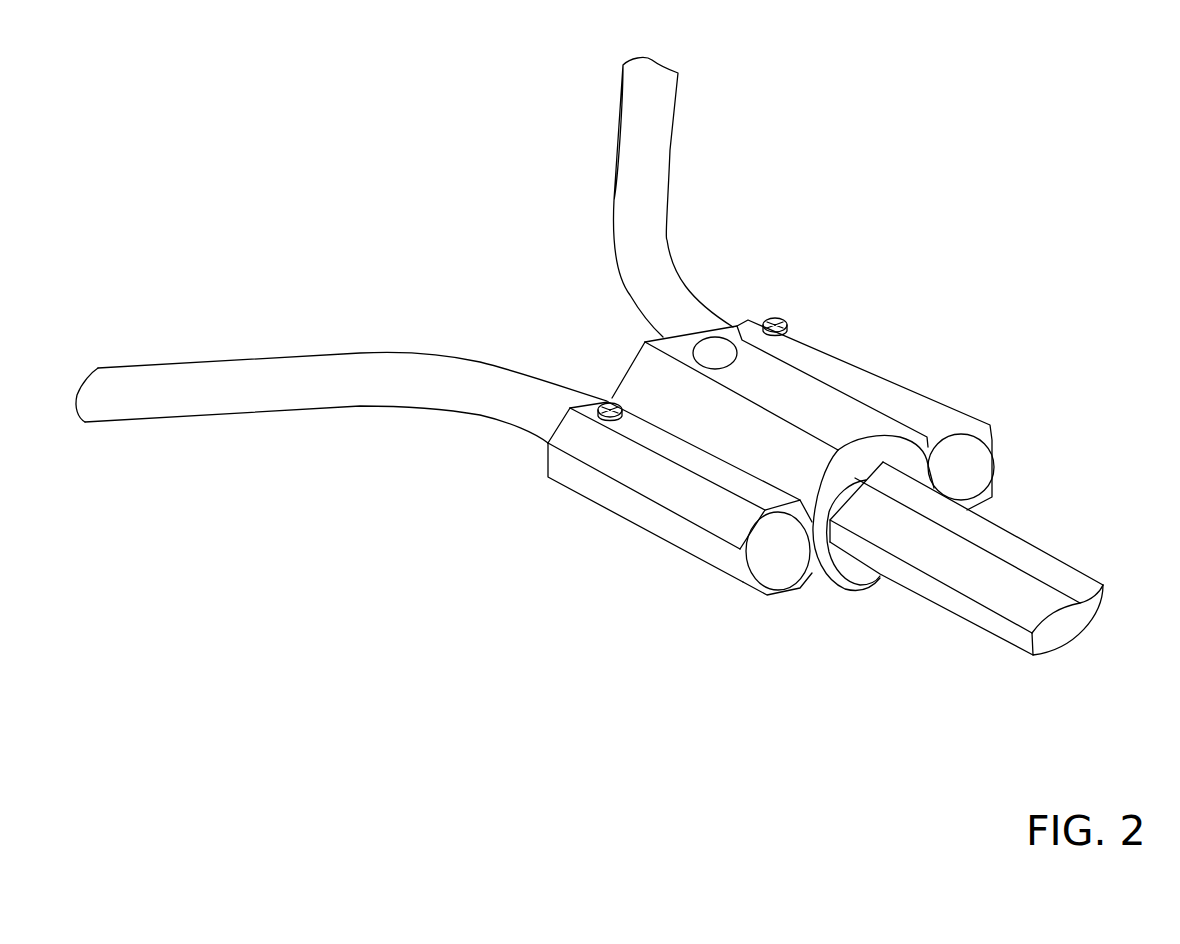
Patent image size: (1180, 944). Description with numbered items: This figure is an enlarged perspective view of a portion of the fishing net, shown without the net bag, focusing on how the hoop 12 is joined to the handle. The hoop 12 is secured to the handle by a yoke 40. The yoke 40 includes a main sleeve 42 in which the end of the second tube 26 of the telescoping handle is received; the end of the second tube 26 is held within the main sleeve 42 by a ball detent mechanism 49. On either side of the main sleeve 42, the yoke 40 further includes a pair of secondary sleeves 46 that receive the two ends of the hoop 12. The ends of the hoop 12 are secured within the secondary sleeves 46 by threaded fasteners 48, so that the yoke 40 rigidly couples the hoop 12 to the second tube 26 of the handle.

The hoop 12 is at (440, 410).
The second tube 26 is at (1005, 592).
The yoke 40 is at (906, 278).
The main sleeve 42 is at (874, 573).
The secondary sleeves 46 is at (762, 562).
The threaded fasteners 48 is at (606, 402).
The ball detent mechanism 49 is at (717, 345).